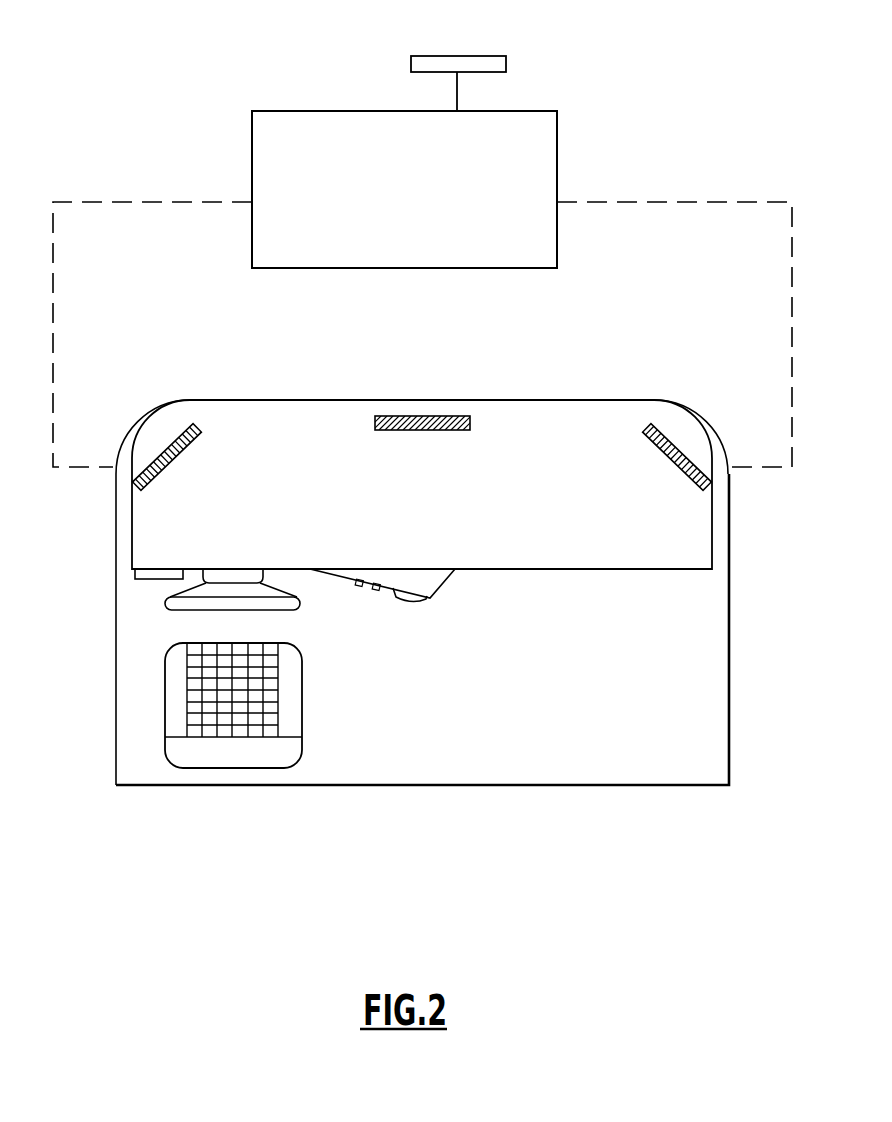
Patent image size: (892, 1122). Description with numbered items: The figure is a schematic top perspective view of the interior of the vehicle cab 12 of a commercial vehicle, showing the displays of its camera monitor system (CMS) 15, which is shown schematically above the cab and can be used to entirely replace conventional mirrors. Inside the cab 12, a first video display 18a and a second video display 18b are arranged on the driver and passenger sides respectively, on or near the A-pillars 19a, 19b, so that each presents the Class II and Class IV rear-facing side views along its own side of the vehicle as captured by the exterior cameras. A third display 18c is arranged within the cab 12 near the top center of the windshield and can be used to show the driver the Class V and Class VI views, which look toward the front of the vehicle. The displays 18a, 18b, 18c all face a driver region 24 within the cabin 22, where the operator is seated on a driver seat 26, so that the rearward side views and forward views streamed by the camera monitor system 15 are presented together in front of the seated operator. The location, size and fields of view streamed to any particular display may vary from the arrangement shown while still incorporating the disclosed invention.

The vehicle cab 12 is at (543, 368).
The camera monitor system 15 is at (557, 125).
The first video display 18a is at (157, 429).
The second video display 18b is at (689, 427).
The third display 18c is at (491, 56).
The A-pillar 19a is at (134, 440).
The A-pillar 19b is at (713, 438).
The cabin 22 is at (645, 728).
The driver region 24 is at (362, 597).
The driver seat 26 is at (287, 692).